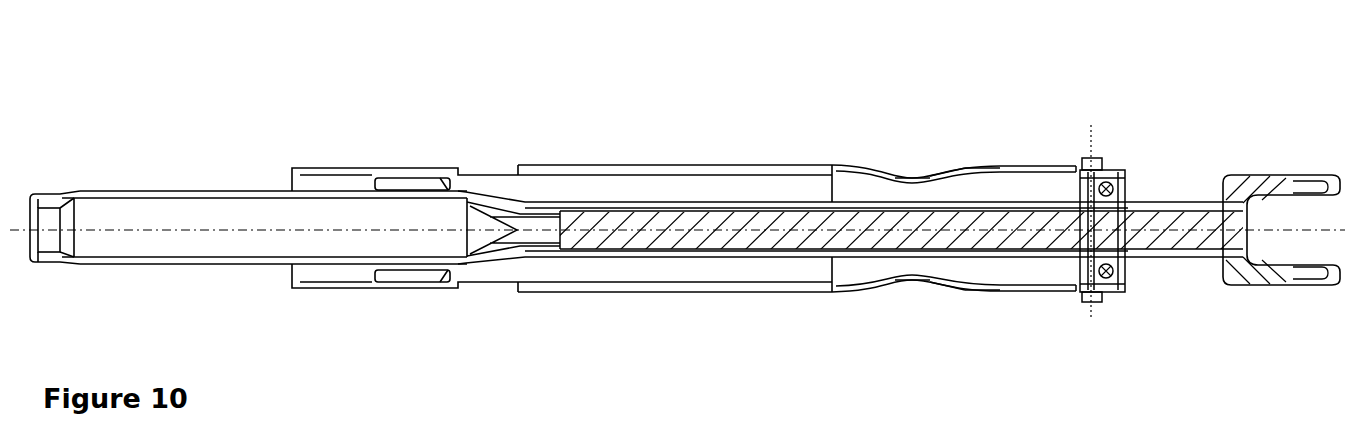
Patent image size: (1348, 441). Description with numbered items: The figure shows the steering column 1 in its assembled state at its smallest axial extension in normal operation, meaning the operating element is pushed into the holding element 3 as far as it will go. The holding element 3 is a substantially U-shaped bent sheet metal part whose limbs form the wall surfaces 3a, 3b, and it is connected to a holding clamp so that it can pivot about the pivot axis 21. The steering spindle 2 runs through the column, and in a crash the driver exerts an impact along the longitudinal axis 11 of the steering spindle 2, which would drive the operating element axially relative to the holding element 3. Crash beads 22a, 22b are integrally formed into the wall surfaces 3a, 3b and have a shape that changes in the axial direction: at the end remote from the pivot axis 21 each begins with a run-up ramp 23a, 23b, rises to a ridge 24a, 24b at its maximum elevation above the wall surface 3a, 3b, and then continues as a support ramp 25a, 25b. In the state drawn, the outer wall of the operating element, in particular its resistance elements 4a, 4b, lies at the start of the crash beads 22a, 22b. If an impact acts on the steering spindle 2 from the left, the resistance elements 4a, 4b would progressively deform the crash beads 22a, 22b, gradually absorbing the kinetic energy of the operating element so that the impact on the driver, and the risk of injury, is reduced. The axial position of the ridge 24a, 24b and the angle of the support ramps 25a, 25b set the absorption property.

The steering column 1 is at (388, 86).
The steering spindle 2 is at (203, 196).
The holding element 3 is at (767, 203).
The wall surface 3a is at (702, 292).
The wall surface 3b is at (732, 165).
The resistance element 4a is at (818, 291).
The resistance element 4b is at (822, 166).
The longitudinal axis 11 is at (1298, 235).
The pivot axis 21 is at (1093, 140).
The crash bead 22a is at (916, 302).
The crash bead 22b is at (916, 157).
The run-up ramp 23a is at (887, 291).
The run-up ramp 23b is at (868, 167).
The ridge 24a is at (930, 291).
The ridge 24b is at (947, 167).
The support ramp 25a is at (970, 291).
The support ramp 25b is at (968, 168).